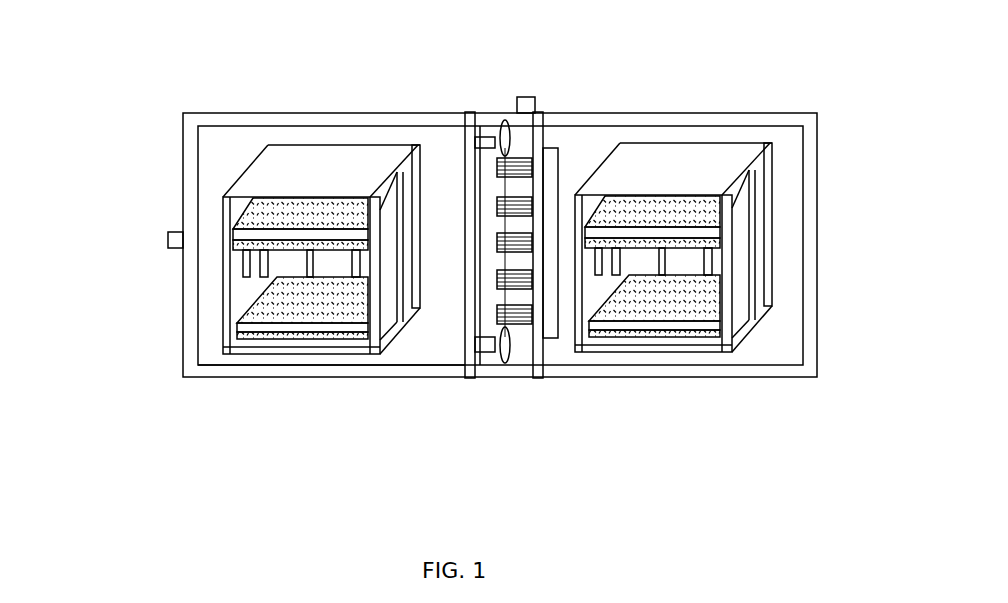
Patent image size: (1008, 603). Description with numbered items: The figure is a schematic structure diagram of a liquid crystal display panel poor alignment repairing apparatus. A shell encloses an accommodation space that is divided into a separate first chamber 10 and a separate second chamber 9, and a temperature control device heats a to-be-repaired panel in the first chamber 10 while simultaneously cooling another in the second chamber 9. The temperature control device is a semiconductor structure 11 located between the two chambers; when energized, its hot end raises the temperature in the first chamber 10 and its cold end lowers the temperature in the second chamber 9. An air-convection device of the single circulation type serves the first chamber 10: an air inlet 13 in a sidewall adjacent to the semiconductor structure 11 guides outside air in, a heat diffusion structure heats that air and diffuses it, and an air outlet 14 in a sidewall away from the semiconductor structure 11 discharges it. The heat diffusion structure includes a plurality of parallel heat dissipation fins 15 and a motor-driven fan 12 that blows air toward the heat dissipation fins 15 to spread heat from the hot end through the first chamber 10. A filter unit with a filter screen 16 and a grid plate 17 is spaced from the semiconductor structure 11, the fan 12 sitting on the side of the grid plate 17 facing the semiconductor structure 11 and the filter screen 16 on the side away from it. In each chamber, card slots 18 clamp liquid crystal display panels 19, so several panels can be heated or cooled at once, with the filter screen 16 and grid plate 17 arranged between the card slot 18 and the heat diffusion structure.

The second chamber 9 is at (790, 352).
The first chamber 10 is at (277, 367).
The semiconductor structure 11 is at (557, 328).
The fan 12 is at (500, 120).
The air inlet 13 is at (522, 97).
The air outlet 14 is at (168, 237).
The heat dissipation fins 15 is at (517, 158).
The filter screen 16 is at (472, 247).
The grid plate 17 is at (477, 317).
The card slot 18 is at (253, 295).
The liquid crystal display panel 19 is at (273, 317).